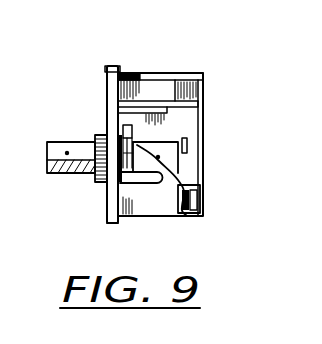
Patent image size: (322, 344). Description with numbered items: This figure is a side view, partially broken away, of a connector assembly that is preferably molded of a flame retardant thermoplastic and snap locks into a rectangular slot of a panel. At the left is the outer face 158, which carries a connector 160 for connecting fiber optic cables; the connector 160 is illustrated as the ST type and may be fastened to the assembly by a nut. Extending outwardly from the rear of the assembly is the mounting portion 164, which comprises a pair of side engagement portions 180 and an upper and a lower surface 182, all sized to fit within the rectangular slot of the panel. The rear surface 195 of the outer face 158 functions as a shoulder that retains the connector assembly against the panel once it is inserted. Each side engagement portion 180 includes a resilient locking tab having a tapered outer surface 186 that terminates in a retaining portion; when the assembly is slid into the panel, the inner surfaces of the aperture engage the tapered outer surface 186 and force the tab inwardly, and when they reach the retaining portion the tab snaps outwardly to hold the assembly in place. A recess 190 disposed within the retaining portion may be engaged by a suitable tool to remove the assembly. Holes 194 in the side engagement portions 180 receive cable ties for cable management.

The outer face 158 is at (106, 77).
The connector 160 is at (61, 142).
The mounting portion 164 is at (206, 77).
The side engagement portion 180 is at (152, 198).
The upper and lower surface 182 is at (167, 72).
The tapered outer surface 186 is at (134, 163).
The recess 190 is at (107, 130).
The hole 194 is at (189, 217).
The rear surface 195 is at (120, 67).